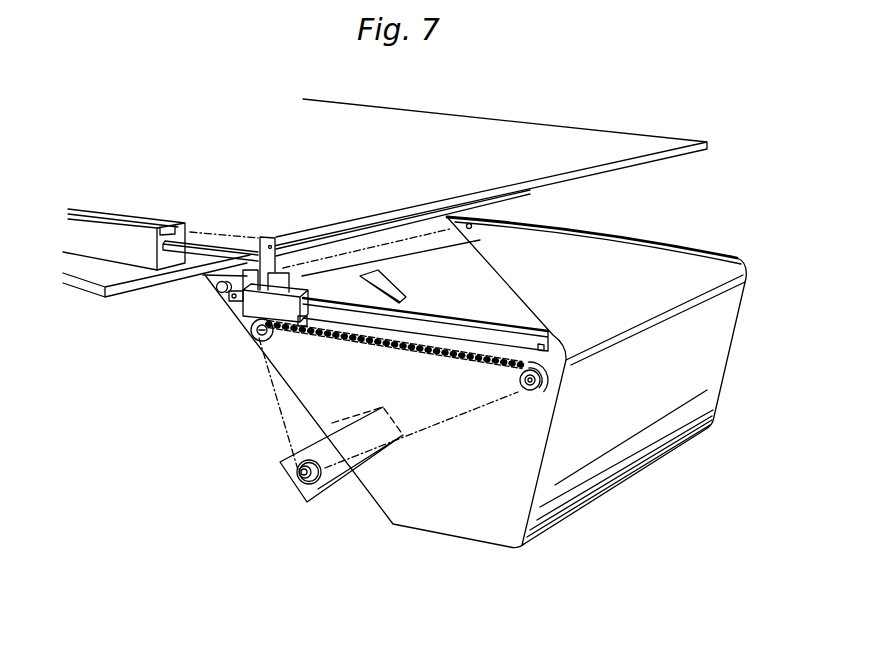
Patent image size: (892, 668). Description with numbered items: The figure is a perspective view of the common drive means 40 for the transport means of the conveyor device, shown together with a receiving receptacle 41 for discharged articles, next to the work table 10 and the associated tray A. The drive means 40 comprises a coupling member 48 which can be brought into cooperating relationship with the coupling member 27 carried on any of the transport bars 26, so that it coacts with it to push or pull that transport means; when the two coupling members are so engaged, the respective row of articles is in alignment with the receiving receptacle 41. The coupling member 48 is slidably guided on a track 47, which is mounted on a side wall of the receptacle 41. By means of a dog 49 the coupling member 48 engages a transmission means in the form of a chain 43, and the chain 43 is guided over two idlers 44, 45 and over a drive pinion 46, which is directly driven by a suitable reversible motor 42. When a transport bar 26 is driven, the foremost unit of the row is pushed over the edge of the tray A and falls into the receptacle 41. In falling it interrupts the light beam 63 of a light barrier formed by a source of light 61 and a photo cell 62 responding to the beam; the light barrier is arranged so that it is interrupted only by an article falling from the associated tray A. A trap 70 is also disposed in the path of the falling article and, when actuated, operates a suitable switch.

The tray A is at (475, 140).
The work table with fence 10 is at (134, 202).
The transport bar 26 is at (200, 243).
The coupling member 27 is at (272, 262).
The photo cell 62 is at (217, 290).
The coupling member 48 is at (255, 303).
The dog 49 is at (302, 327).
The idler 44 is at (256, 333).
The light beam 63 is at (383, 248).
The source of light 61 is at (472, 224).
The trap 70 is at (403, 301).
The track 47 is at (484, 337).
The chain 43 is at (274, 407).
The idler 45 is at (530, 391).
The common drive means 40 is at (269, 454).
The receiving receptacle 41 is at (450, 527).
The reversible motor 42 is at (307, 502).
The drive pinion 46 is at (297, 479).